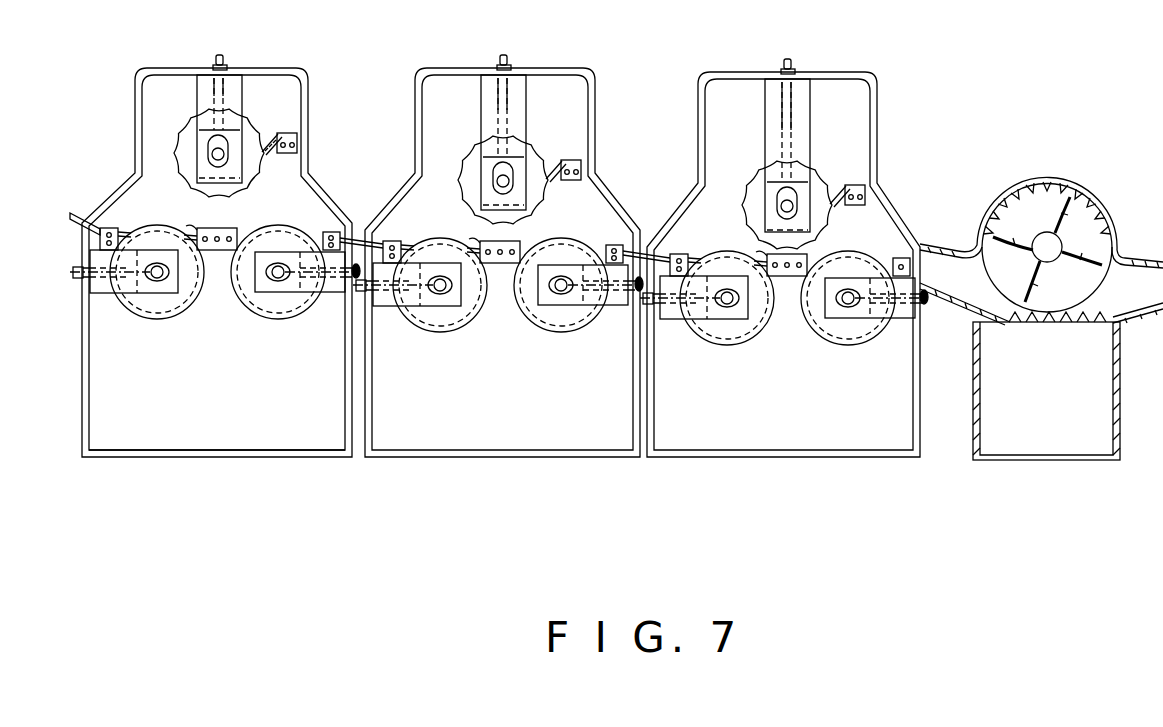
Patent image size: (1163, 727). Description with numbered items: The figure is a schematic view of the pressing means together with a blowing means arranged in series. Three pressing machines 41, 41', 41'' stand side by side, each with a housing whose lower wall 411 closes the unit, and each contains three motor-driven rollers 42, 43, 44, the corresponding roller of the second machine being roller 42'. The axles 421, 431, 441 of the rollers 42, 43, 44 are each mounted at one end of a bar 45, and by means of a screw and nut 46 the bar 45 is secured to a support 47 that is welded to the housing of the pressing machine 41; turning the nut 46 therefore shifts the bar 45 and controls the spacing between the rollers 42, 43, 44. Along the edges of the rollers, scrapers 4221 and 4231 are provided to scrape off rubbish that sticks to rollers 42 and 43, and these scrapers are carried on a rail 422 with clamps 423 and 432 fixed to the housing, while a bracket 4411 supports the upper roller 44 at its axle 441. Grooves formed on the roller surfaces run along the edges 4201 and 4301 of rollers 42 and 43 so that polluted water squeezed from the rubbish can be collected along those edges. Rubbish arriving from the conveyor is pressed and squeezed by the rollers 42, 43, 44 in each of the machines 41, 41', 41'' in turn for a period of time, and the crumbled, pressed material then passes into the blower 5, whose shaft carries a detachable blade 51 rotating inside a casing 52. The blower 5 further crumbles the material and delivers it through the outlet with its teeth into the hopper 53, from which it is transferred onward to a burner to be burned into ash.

The pressing machine 41 is at (217, 284).
The housing bottom wall 411 is at (317, 453).
The pressing machine 41' is at (502, 281).
The pressing machine 41'' is at (783, 283).
The roller 42 is at (157, 291).
The first lower wheel of second unit 42' is at (440, 308).
The edge of roller 4201 is at (177, 310).
The roller 43 is at (264, 301).
The edge of roller 4301 is at (290, 311).
The roller 44 is at (197, 121).
The axle 441 is at (226, 158).
The bracket 4411 is at (264, 148).
The bar 45 is at (222, 101).
The screw and nut 46 is at (82, 275).
The support 47 is at (105, 287).
The axle 421 is at (158, 262).
The guide rail 422 is at (96, 226).
The scraper 4221 is at (123, 231).
The center clamp 423 is at (212, 230).
The scraper 4231 is at (190, 229).
The axle 431 is at (278, 262).
The rail clamp 432 is at (311, 232).
The blower 5 is at (1051, 195).
The detachable blade 51 is at (1085, 248).
The cutter casing 52 is at (1012, 185).
The hopper 53 is at (1057, 325).